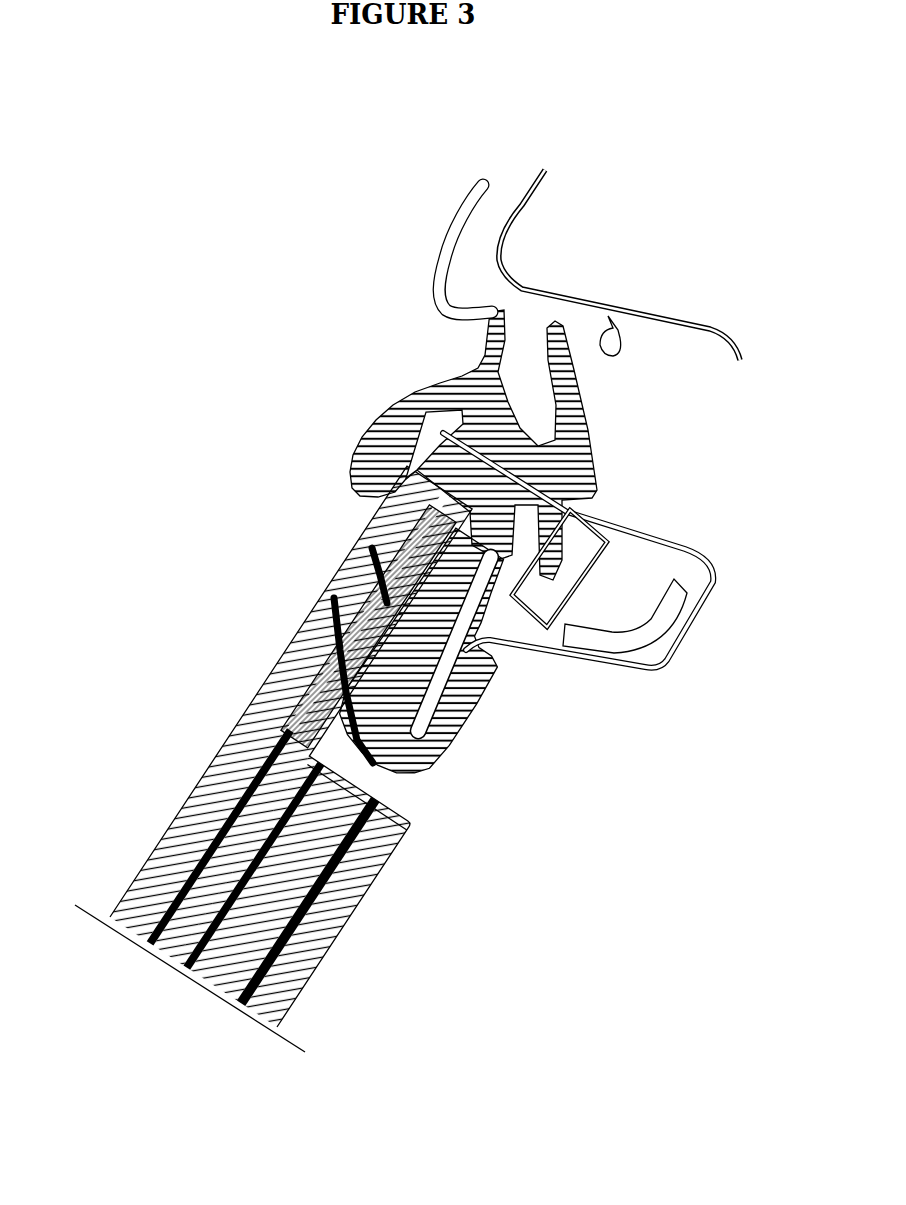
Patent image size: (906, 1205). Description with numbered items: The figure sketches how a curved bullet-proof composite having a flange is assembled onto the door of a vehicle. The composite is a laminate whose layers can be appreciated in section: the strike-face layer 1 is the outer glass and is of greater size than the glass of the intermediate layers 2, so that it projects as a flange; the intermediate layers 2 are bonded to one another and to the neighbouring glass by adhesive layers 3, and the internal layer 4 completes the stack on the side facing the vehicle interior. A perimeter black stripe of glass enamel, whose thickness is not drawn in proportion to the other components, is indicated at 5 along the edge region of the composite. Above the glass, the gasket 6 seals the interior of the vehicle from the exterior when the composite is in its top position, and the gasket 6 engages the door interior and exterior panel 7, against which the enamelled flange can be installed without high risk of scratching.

The strike-face layer 1 is at (330, 746).
The intermediate layers 2 is at (343, 771).
The adhesive layers 3 is at (265, 921).
The internal layer 4 is at (366, 914).
The edge band 5 is at (314, 626).
The gasket 6 is at (411, 551).
The door interior and exterior panel 7 is at (592, 445).